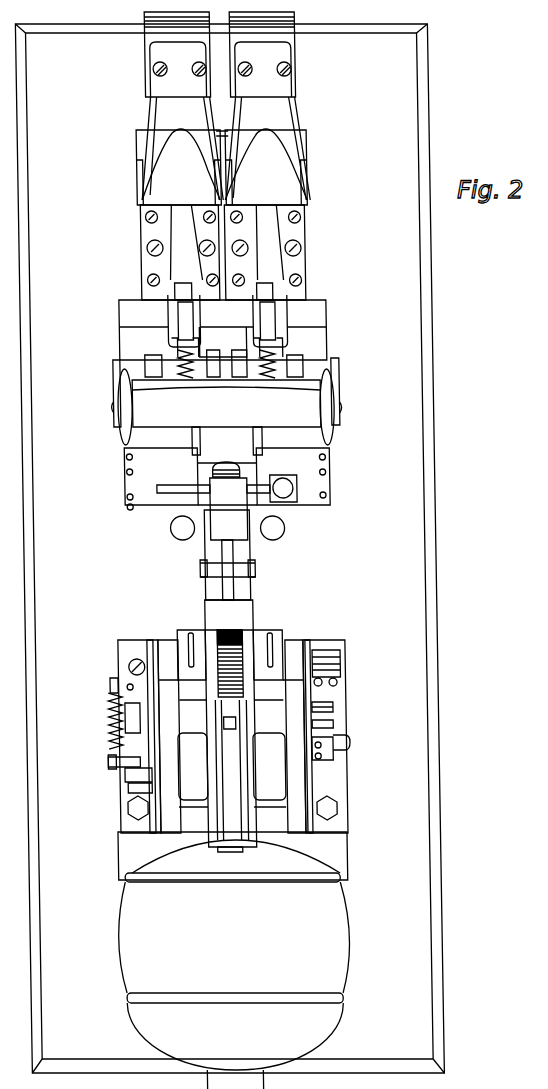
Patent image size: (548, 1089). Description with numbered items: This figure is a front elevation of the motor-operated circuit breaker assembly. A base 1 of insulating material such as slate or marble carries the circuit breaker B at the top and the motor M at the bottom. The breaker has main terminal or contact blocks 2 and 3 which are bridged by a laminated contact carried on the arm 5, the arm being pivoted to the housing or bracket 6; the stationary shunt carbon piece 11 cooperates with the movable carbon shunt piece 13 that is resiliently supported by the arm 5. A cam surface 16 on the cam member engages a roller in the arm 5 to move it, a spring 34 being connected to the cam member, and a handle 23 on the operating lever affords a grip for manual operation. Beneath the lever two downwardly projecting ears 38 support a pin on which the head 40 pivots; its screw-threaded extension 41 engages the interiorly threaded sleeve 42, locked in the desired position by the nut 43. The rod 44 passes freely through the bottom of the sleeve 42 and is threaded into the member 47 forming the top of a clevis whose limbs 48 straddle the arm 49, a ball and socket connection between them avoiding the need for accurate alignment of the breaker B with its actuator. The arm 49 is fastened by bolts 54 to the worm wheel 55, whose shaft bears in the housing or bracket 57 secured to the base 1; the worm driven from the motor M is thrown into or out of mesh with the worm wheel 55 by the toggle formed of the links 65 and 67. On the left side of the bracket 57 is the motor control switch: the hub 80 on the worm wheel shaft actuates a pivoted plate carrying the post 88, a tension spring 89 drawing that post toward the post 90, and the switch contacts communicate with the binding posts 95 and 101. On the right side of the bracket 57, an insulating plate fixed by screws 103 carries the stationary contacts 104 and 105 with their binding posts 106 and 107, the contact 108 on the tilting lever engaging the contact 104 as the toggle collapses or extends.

The base 1 is at (409, 427).
The main terminal block 2 is at (304, 139).
The main terminal block 3 is at (166, 295).
The arm 5 is at (178, 233).
The housing or bracket 6 is at (330, 362).
The stationary shunt carbon piece 11 is at (146, 22).
The movable carbon shunt piece 13 is at (156, 37).
The cam surface 16 is at (172, 283).
The handle 23 is at (304, 404).
The spring 34 is at (174, 362).
The ears 38 is at (172, 440).
The head 40 is at (235, 460).
The screw-threaded extension 41 is at (162, 465).
The sleeve 42 is at (232, 492).
The nut 43 is at (170, 477).
The rod 44 is at (224, 548).
The clevis member 47 is at (212, 607).
The clevis limbs 48 is at (198, 628).
The arm 49 is at (215, 752).
The bolts 54 is at (216, 711).
The worm wheel 55 is at (226, 658).
The housing or bracket 57 is at (152, 635).
The toggle link 65 is at (146, 637).
The toggle link 67 is at (188, 635).
The hub 80 is at (118, 711).
The post 88 is at (100, 750).
The spring 89 is at (100, 703).
The post 90 is at (107, 674).
The binding post 95 is at (129, 648).
The binding post 101 is at (127, 777).
The screws 103 is at (329, 701).
The contact 104 is at (324, 693).
The contact 105 is at (339, 730).
The binding post 106 is at (326, 645).
The binding post 107 is at (324, 712).
The contact 108 is at (330, 689).
The circuit breaker B is at (377, 309).
The motor M is at (234, 964).